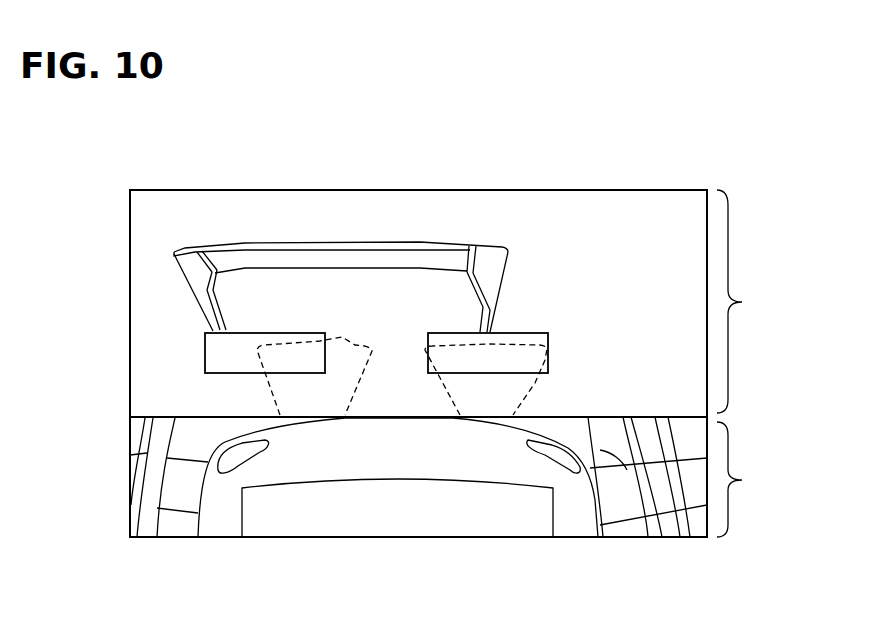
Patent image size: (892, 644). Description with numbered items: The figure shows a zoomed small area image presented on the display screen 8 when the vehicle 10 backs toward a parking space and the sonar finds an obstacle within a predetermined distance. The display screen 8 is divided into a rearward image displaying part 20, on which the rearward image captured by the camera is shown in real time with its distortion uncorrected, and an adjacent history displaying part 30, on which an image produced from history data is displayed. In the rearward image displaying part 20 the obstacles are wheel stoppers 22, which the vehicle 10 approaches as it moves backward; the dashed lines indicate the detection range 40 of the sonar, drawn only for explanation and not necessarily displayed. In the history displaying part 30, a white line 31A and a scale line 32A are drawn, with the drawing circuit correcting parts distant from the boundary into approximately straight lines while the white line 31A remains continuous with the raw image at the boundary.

The display screen 8 is at (642, 189).
The vehicle 10 is at (395, 462).
The rearward image displaying part 20 is at (451, 303).
The wheel stopper 22 is at (282, 333).
The history displaying part 30 is at (745, 479).
The white line 31A is at (148, 482).
The scale line 32A is at (627, 470).
The detection range 40 is at (342, 337).